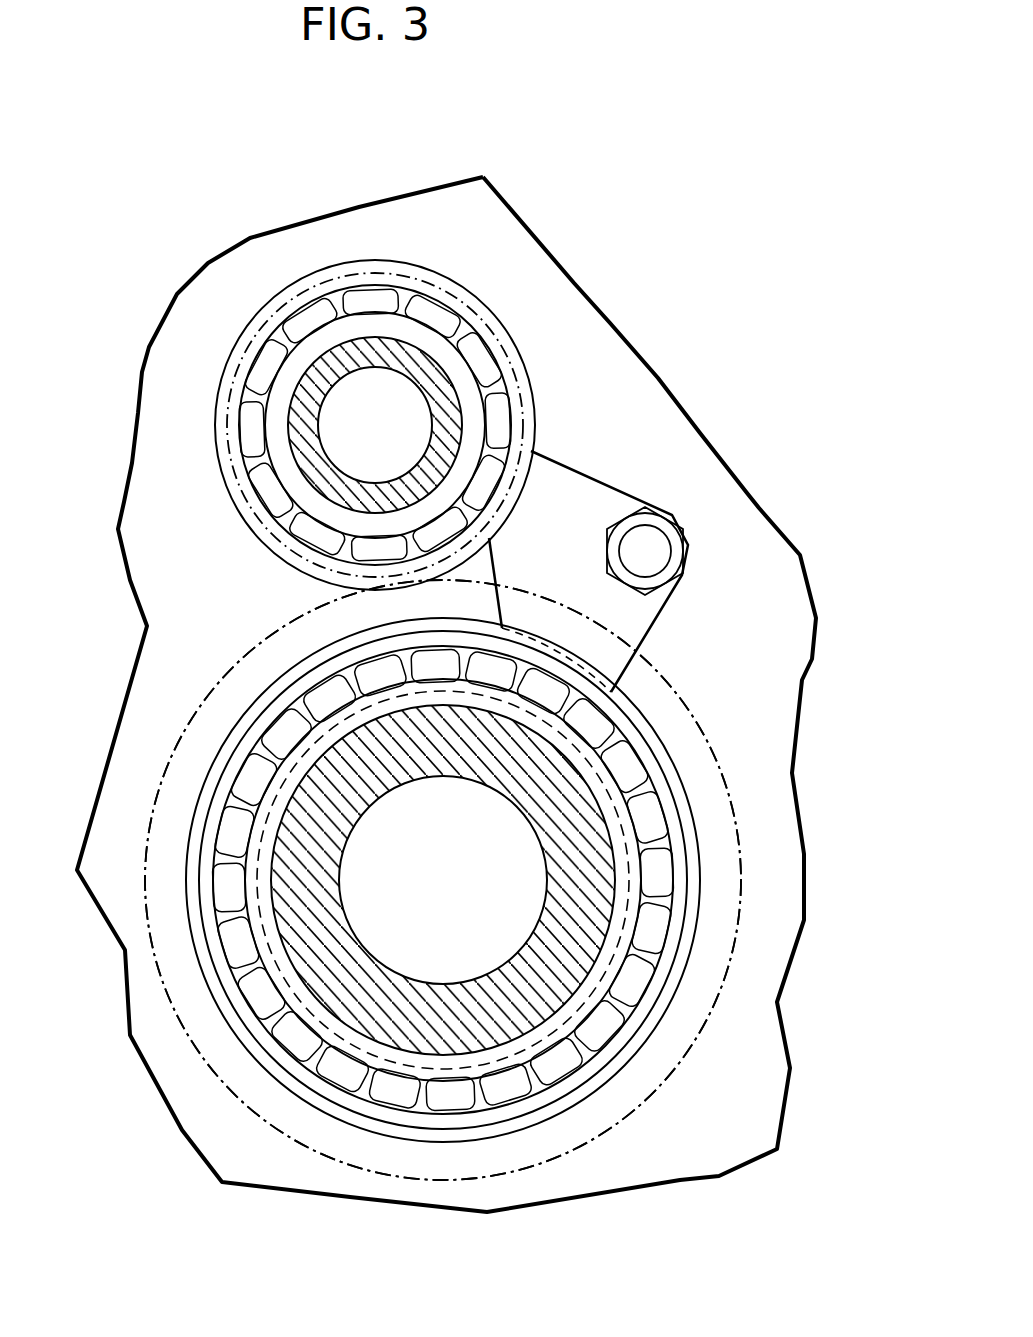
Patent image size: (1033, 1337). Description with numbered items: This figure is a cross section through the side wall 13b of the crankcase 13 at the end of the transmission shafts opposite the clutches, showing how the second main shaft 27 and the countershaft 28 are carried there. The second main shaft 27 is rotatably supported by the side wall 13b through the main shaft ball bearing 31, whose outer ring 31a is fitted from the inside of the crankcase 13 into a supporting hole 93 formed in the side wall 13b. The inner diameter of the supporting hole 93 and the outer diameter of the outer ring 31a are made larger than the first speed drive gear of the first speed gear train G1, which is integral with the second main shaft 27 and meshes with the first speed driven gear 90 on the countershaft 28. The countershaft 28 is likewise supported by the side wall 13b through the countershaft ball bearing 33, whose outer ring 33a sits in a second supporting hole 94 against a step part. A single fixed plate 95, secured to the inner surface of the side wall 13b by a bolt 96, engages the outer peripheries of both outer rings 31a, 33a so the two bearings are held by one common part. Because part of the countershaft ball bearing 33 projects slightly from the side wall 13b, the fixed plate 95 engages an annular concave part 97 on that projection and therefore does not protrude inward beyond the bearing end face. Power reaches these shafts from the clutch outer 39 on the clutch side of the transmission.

The crankcase 13 is at (586, 279).
The side wall 13b is at (594, 362).
The second main shaft 27 is at (455, 403).
The countershaft 28 is at (600, 887).
The main shaft ball bearing 31 is at (318, 300).
The outer ring 31a is at (215, 400).
The countershaft ball bearing 33 is at (325, 1065).
The outer ring 33a is at (452, 1128).
The clutch outer 39 is at (369, 270).
The first speed driven gear 90 is at (657, 1090).
The supporting hole 93 is at (247, 498).
The supporting hole 94 is at (207, 948).
The fixed plate 95 is at (584, 496).
The bolt 96 is at (690, 538).
The annular concave part 97 is at (210, 775).
The first speed gear train G1 is at (302, 605).